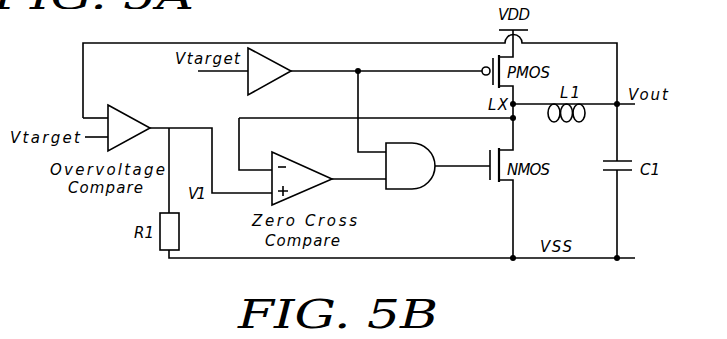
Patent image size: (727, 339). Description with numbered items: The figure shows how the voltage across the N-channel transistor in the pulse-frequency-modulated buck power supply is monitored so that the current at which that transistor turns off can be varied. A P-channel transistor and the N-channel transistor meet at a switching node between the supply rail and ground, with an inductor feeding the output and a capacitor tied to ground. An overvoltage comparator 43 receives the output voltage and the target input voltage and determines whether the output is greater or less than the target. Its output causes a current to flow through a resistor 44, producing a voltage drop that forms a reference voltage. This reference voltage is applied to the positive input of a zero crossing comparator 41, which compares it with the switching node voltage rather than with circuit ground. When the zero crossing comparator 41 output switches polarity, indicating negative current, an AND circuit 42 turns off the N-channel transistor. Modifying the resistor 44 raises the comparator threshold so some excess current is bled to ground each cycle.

The zero crossing comparator 41 is at (285, 157).
The AND circuit 42 is at (400, 189).
The overvoltage comparator 43 is at (117, 107).
The resistor 44 is at (163, 252).